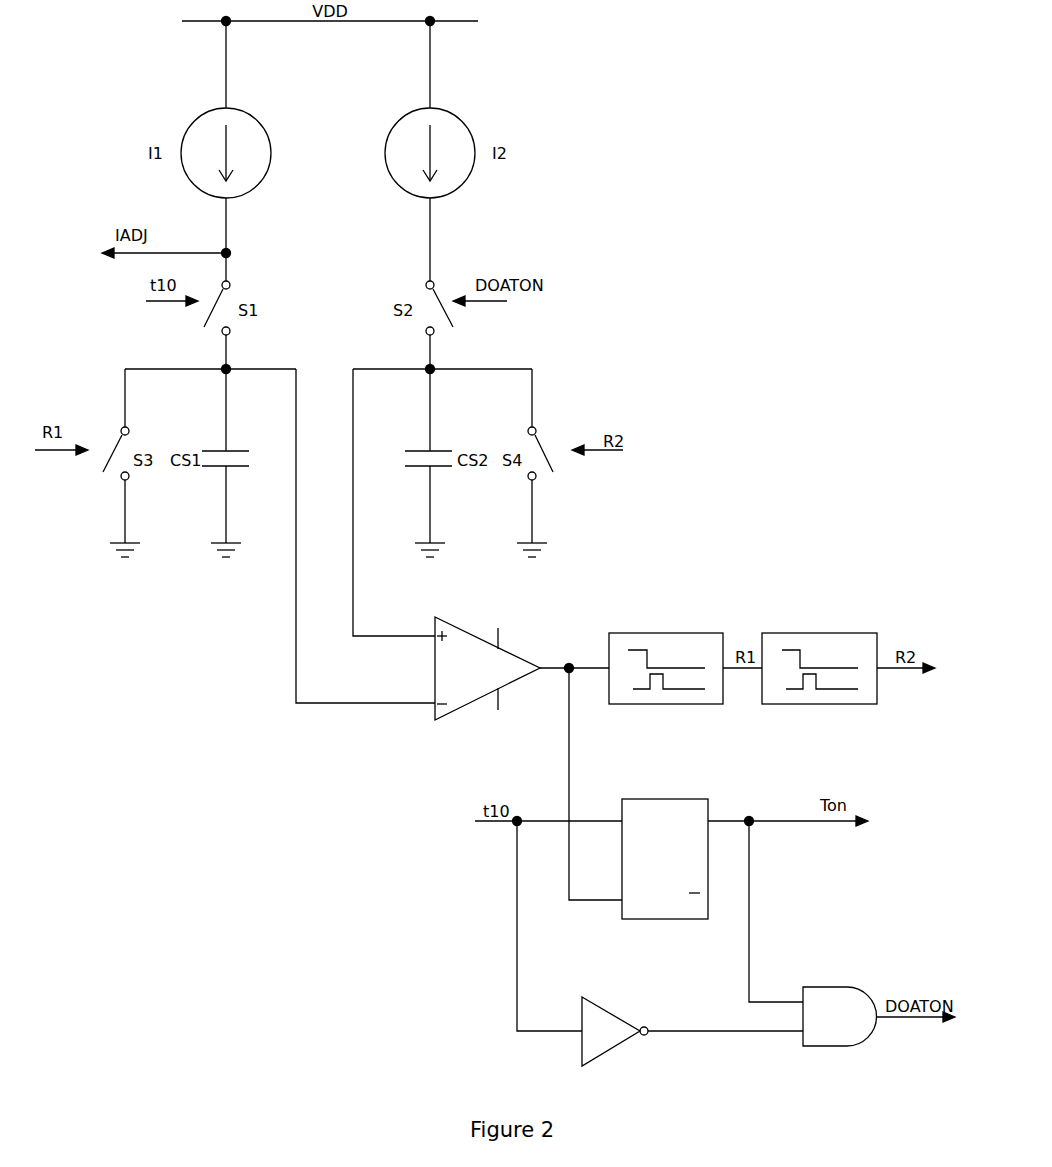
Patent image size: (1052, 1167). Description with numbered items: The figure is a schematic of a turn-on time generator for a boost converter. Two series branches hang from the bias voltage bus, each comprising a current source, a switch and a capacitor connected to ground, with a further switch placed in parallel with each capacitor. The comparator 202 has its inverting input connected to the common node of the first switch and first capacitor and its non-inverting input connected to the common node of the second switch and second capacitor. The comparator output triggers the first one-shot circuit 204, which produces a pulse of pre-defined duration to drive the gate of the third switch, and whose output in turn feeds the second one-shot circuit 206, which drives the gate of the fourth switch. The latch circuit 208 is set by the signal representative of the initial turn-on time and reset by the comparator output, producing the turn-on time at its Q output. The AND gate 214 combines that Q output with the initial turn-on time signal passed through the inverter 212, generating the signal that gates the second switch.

The comparator 202 is at (455, 679).
The first one-shot circuit 204 is at (672, 633).
The second one-shot circuit 206 is at (825, 633).
The latch circuit 208 is at (651, 869).
The inverter 212 is at (588, 1042).
The AND gate 214 is at (825, 1027).